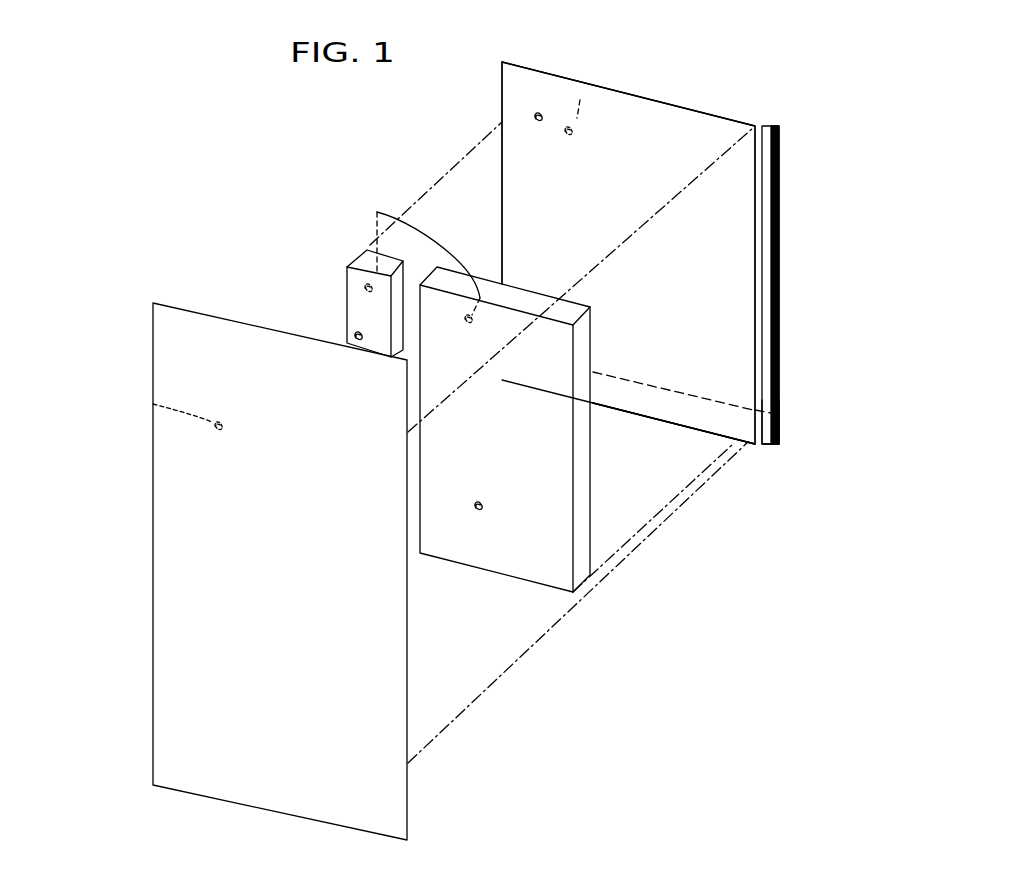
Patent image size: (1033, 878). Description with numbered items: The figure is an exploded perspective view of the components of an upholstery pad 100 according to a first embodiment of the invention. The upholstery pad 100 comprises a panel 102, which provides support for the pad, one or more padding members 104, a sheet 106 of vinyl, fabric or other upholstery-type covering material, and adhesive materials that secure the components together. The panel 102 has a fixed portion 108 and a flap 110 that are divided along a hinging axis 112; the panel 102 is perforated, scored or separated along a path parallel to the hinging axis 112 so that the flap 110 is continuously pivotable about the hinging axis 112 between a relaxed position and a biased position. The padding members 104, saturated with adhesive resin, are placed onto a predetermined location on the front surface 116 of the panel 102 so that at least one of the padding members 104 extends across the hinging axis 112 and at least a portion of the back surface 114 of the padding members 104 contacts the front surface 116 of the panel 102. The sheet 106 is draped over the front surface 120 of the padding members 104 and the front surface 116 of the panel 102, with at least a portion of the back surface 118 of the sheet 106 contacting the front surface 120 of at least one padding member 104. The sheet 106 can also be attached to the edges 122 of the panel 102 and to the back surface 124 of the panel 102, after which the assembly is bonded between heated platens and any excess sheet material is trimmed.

The upholstery pad 100 is at (258, 128).
The panel 102 is at (690, 128).
The padding members 104 is at (443, 340).
The sheet 106 is at (153, 632).
The fixed portion 108 is at (780, 273).
The flap 110 is at (778, 425).
The hinging axis 112 is at (717, 405).
The back surface of the padding members 114 is at (377, 212).
The front surface of the panel 116 is at (543, 112).
The back surface of the sheet 118 is at (153, 404).
The front surface of the padding members 120 is at (350, 330).
The edges of the panel 122 is at (502, 97).
The back surface of the panel 124 is at (580, 100).